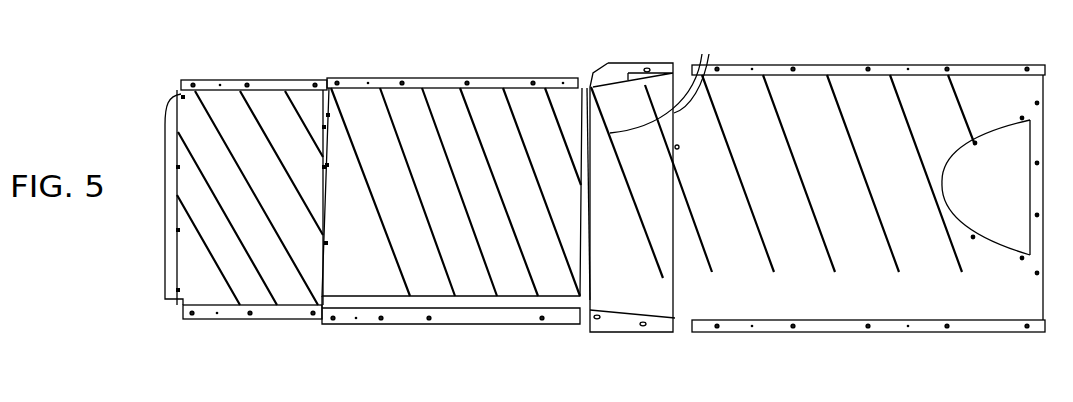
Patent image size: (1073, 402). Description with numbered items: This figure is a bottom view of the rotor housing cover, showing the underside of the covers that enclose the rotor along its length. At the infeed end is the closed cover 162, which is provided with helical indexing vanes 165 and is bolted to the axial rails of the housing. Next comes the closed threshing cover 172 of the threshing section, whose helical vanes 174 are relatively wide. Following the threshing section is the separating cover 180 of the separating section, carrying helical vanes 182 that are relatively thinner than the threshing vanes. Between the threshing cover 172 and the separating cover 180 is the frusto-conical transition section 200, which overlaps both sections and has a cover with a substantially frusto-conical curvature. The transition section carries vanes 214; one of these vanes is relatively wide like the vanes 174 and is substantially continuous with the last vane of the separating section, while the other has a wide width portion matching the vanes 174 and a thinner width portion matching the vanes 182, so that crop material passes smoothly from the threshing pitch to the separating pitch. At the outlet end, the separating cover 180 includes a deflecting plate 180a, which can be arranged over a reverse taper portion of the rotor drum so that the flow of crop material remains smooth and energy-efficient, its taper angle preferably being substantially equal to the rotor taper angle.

The closed cover 162 is at (203, 295).
The helical indexing vanes 165 is at (265, 196).
The closed threshing cover 172 is at (437, 288).
The helical vanes 174 is at (505, 215).
The frusto-conical transition section 200 is at (678, 57).
The vanes of the transition section cover 214 is at (665, 83).
The separating cover 180 is at (810, 308).
The helical vanes 182 is at (876, 192).
The deflecting plate 180a is at (1011, 193).